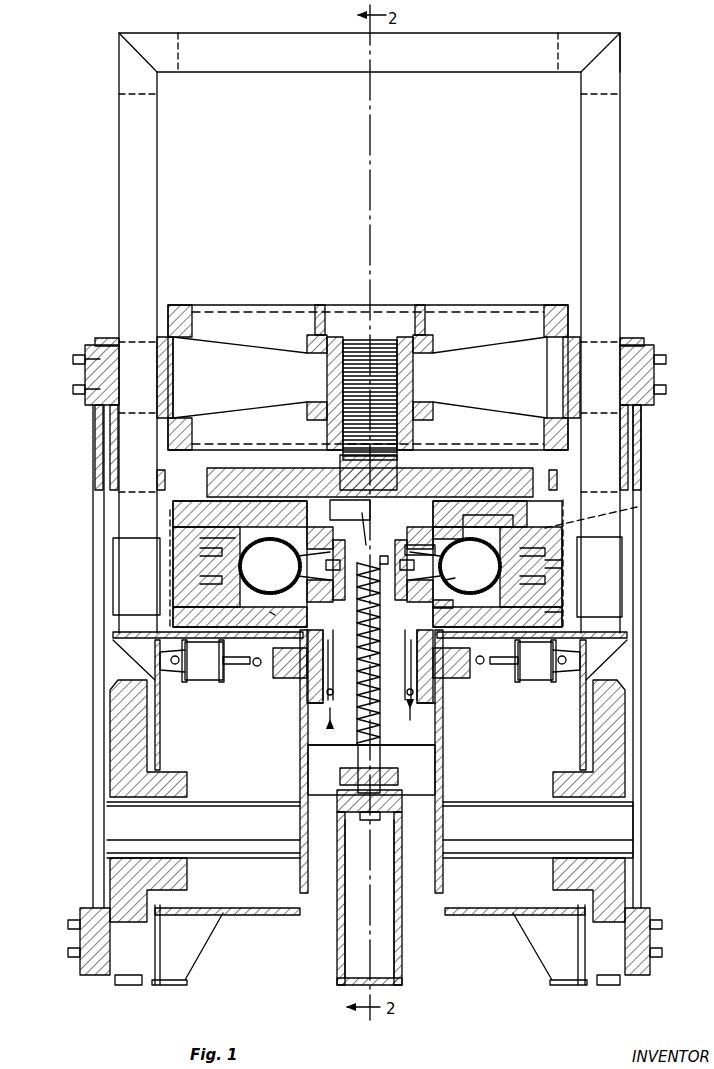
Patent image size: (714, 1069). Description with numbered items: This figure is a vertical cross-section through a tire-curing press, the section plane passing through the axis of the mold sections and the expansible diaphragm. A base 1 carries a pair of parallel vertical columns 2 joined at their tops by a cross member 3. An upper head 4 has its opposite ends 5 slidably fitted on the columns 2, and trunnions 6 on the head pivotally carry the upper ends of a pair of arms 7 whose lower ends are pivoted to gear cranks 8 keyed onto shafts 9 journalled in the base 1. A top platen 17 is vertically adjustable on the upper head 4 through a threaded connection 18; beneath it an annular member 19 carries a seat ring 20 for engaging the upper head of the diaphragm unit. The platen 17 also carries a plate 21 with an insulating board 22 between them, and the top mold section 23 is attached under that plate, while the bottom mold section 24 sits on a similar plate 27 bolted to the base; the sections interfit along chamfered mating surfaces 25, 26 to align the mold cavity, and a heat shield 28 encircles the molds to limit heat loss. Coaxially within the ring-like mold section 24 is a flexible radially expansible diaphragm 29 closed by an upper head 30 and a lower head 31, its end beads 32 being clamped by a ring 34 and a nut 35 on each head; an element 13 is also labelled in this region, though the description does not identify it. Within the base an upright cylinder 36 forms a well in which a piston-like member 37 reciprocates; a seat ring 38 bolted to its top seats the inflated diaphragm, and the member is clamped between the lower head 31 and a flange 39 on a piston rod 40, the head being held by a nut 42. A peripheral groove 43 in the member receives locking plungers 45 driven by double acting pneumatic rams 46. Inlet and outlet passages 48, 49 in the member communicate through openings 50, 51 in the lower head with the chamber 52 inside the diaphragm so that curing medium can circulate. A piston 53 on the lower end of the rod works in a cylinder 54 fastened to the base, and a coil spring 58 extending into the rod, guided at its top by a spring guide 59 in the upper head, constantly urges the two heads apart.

The base 1 is at (590, 722).
The columns 2 is at (158, 207).
The cross member 3 is at (461, 72).
The upper head 4 is at (486, 300).
The opposite ends 5 is at (113, 470).
The trunnions 6 is at (85, 354).
The arms 7 is at (104, 612).
The gear cranks 8 is at (127, 980).
The shafts 9 is at (117, 823).
The ring 13 is at (448, 605).
The top platen 17 is at (266, 468).
The threaded connection 18 is at (398, 392).
The annular member 19 is at (440, 527).
The seat ring 20 is at (470, 525).
The plate 21 is at (548, 492).
The insulating board 22 is at (185, 500).
The top mold section 23 is at (533, 544).
The bottom mold section 24 is at (518, 598).
The chamfered mating surface 25 is at (545, 562).
The chamfered mating surface 26 is at (555, 568).
The plate 27 is at (553, 612).
The heat shield 28 is at (608, 508).
The radially expansible diaphragm 29 is at (220, 570).
The upper head 30 is at (340, 470).
The lower head 31 is at (371, 597).
The beads 32 is at (437, 552).
The ring 34 is at (410, 527).
The nut 35 is at (360, 545).
The upright cylinder 36 is at (443, 760).
The piston-like member 37 is at (432, 735).
The seat ring 38 is at (260, 558).
The flange 39 is at (330, 680).
The piston rod 40 is at (358, 758).
The nut 42 is at (359, 534).
The peripheral groove 43 is at (307, 686).
The locking plungers 45 is at (278, 664).
The double acting pneumatic rams 46 is at (204, 681).
The inlet passage 48 is at (410, 680).
The outlet passage 49 is at (370, 703).
The openings 50 is at (408, 562).
The openings 51 is at (342, 570).
The chamber 52 is at (245, 555).
The piston 53 is at (395, 810).
The cylinder 54 is at (400, 930).
The coil spring 58 is at (381, 730).
The spring guide 59 is at (363, 521).